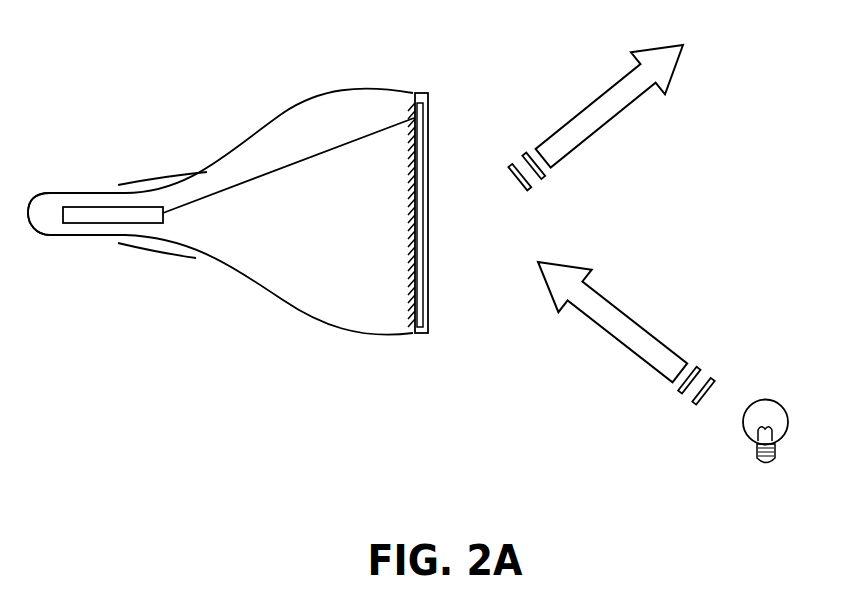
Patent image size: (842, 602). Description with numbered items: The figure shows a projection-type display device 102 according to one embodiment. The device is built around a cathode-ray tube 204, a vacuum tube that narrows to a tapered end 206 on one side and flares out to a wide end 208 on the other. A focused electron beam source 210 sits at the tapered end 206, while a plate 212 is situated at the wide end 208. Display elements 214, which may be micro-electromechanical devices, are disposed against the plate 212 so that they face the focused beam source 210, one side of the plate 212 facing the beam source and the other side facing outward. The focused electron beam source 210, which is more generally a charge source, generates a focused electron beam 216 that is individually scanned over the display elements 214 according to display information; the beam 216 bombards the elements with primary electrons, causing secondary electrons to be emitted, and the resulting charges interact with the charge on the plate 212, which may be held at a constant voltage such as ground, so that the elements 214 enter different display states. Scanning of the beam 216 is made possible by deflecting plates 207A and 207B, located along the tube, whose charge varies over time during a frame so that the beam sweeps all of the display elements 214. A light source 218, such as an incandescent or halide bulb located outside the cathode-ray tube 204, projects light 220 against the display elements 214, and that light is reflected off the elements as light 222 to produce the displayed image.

The projection-type display device 102 is at (323, 400).
The cathode-ray tube 204 is at (327, 90).
The tapered end 206 is at (45, 208).
The deflecting plate 207A is at (160, 178).
The deflecting plate 207B is at (163, 253).
The wide end 208 is at (397, 98).
The focused electron beam source 210 is at (82, 224).
The plate 212 is at (420, 93).
The display elements 214 is at (413, 344).
The focused electron beam 216 is at (294, 167).
The light source 218 is at (763, 400).
The light 220 is at (615, 306).
The light 222 is at (578, 112).